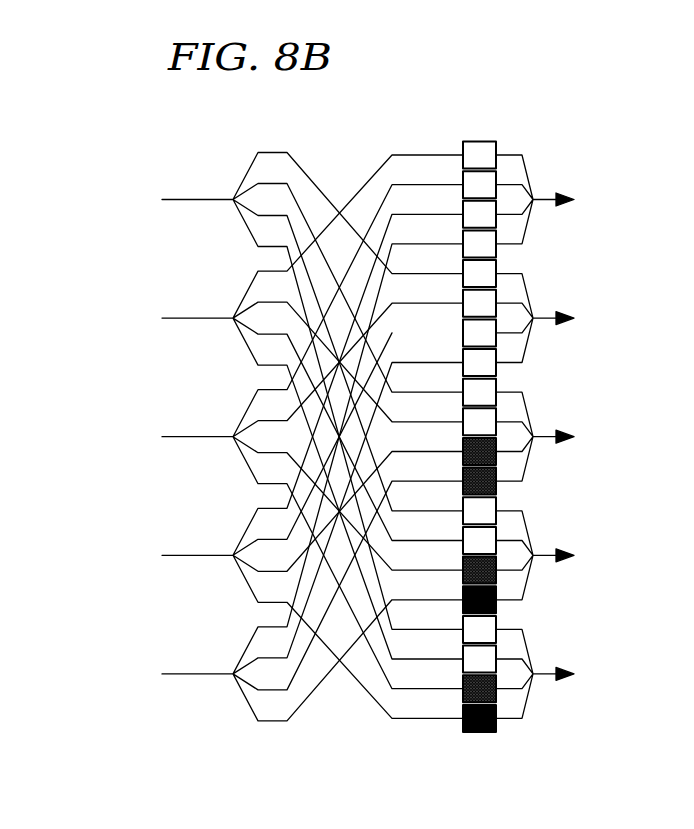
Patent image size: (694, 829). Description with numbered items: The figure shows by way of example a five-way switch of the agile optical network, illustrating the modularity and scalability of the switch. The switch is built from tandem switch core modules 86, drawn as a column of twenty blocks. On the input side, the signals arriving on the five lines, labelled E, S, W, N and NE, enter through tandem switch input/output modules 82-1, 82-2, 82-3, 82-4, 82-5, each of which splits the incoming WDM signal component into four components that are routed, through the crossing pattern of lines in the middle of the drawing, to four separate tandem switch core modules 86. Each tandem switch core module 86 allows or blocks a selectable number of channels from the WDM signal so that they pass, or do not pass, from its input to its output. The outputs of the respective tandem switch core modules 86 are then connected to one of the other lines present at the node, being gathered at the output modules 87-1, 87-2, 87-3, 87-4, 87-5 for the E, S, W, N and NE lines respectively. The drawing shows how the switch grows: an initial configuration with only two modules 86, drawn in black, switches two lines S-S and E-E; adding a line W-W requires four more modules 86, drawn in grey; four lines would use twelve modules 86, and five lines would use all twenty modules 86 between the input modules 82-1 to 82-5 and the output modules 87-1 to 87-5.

The tandem switch core module 86 is at (483, 141).
The tandem switch input/output module 82-1 is at (233, 674).
The tandem switch input/output module 82-2 is at (233, 556).
The tandem switch input/output module 82-3 is at (233, 437).
The tandem switch input/output module 82-4 is at (233, 319).
The tandem switch input/output module 82-5 is at (233, 200).
The output module 87-1 is at (536, 669).
The output module 87-2 is at (536, 550).
The output module 87-3 is at (536, 432).
The output module 87-4 is at (536, 313).
The output module 87-5 is at (536, 194).